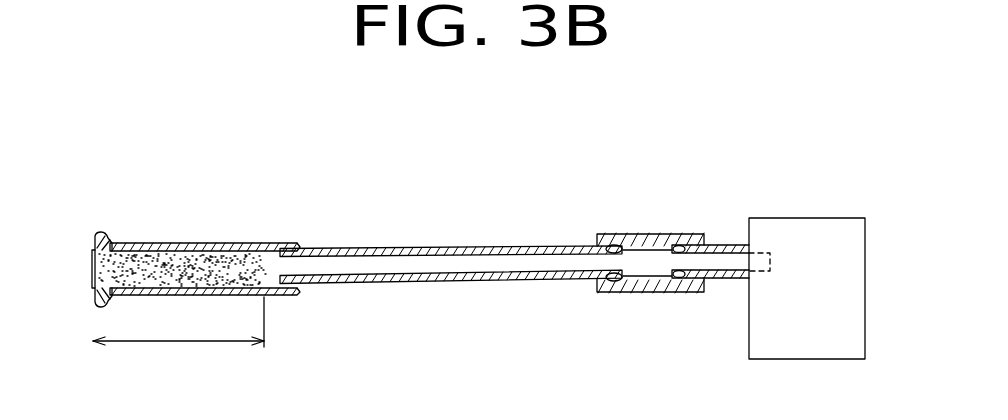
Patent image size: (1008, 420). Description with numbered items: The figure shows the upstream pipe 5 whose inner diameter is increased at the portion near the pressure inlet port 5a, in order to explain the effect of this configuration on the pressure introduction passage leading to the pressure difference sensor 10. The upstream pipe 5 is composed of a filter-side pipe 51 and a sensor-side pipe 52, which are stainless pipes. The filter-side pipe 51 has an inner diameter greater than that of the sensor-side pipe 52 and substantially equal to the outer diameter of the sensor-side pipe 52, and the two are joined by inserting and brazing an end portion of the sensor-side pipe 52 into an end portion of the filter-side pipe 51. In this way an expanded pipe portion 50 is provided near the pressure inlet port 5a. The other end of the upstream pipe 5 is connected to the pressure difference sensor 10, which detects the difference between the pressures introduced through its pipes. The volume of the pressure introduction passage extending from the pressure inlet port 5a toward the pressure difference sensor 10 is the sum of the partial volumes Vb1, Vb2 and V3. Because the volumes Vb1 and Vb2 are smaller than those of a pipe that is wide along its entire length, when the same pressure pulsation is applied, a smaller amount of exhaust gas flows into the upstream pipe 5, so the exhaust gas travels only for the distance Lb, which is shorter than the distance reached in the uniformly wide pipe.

The upstream pipe 5 is at (363, 227).
The pressure inlet port 5a is at (91, 276).
The pressure difference sensor 10 is at (805, 218).
The expanded pipe portion 50 is at (93, 300).
The filter-side pipe 51 is at (217, 242).
The sensor-side pipe 52 is at (530, 246).
The volume of the pressure introduction passage Vb1 is at (457, 268).
The volume of the pressure introduction passage Vb2 is at (643, 260).
The volume of the pressure introduction passage V3 is at (706, 263).
The distance Lb is at (178, 322).